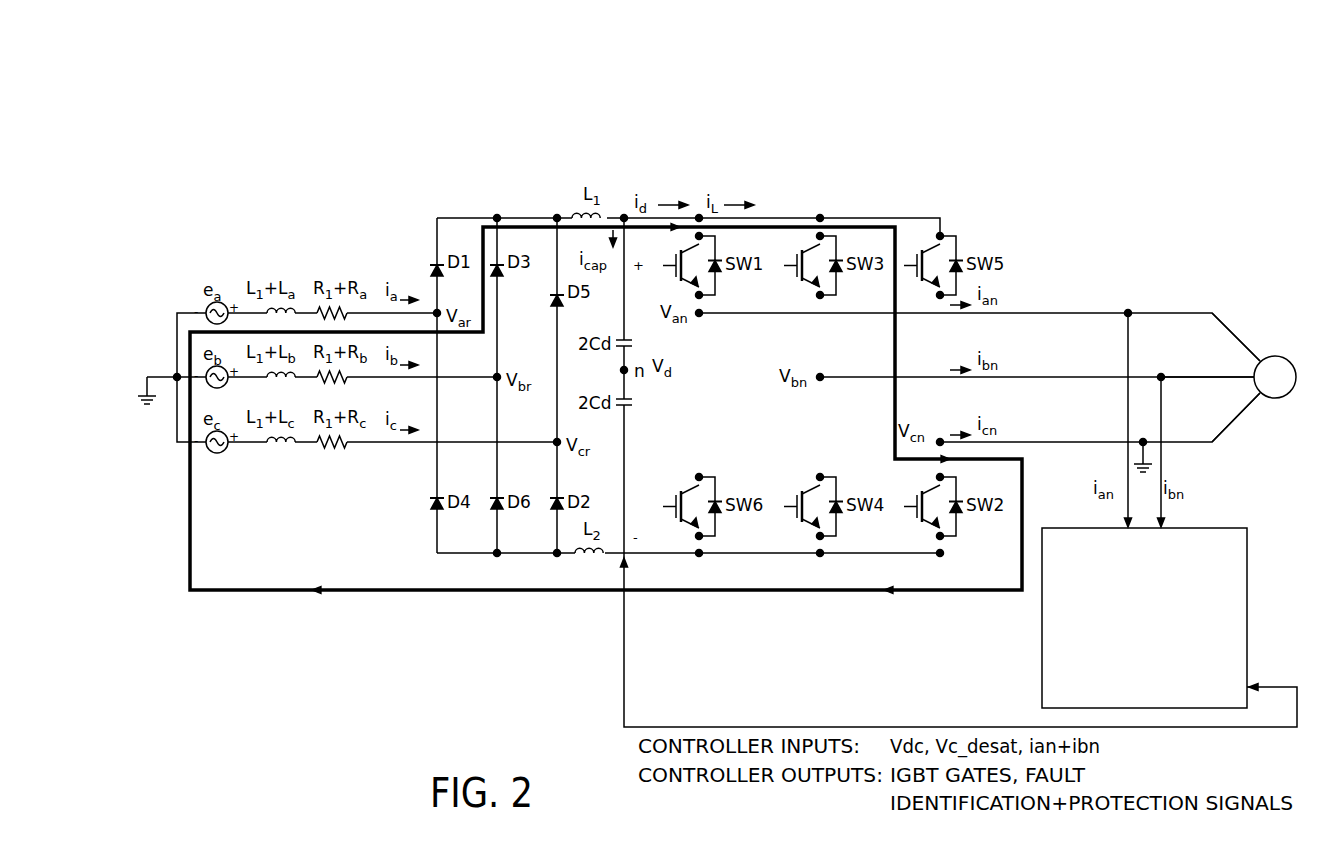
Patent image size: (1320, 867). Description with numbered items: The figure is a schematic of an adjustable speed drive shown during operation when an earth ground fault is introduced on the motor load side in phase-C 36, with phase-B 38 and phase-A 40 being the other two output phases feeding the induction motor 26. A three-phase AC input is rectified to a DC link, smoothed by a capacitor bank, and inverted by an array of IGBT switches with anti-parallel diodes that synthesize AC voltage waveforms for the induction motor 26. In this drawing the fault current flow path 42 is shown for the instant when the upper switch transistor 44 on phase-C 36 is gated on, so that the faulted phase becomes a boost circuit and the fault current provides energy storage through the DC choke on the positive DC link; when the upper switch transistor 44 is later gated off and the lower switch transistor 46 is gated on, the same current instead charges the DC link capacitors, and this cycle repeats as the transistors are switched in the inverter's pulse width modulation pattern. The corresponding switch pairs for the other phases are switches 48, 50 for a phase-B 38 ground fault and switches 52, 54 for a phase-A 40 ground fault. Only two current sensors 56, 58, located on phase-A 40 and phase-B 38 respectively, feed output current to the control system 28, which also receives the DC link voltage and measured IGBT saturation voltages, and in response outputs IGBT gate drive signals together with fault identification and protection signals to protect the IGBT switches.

The induction motor 26 is at (1279, 356).
The control system 28 is at (1247, 625).
The phase-C 36 is at (1239, 421).
The phase-B 38 is at (1206, 376).
The phase-A 40 is at (1232, 333).
The fault current flow path 42 is at (1022, 527).
The upper switch transistor 44 is at (957, 253).
The lower switch transistor 46 is at (957, 497).
The switch 48 is at (814, 254).
The switch 50 is at (814, 494).
The switch 52 is at (694, 254).
The switch 54 is at (694, 494).
The current sensor 56 is at (1127, 311).
The current sensor 58 is at (1160, 375).